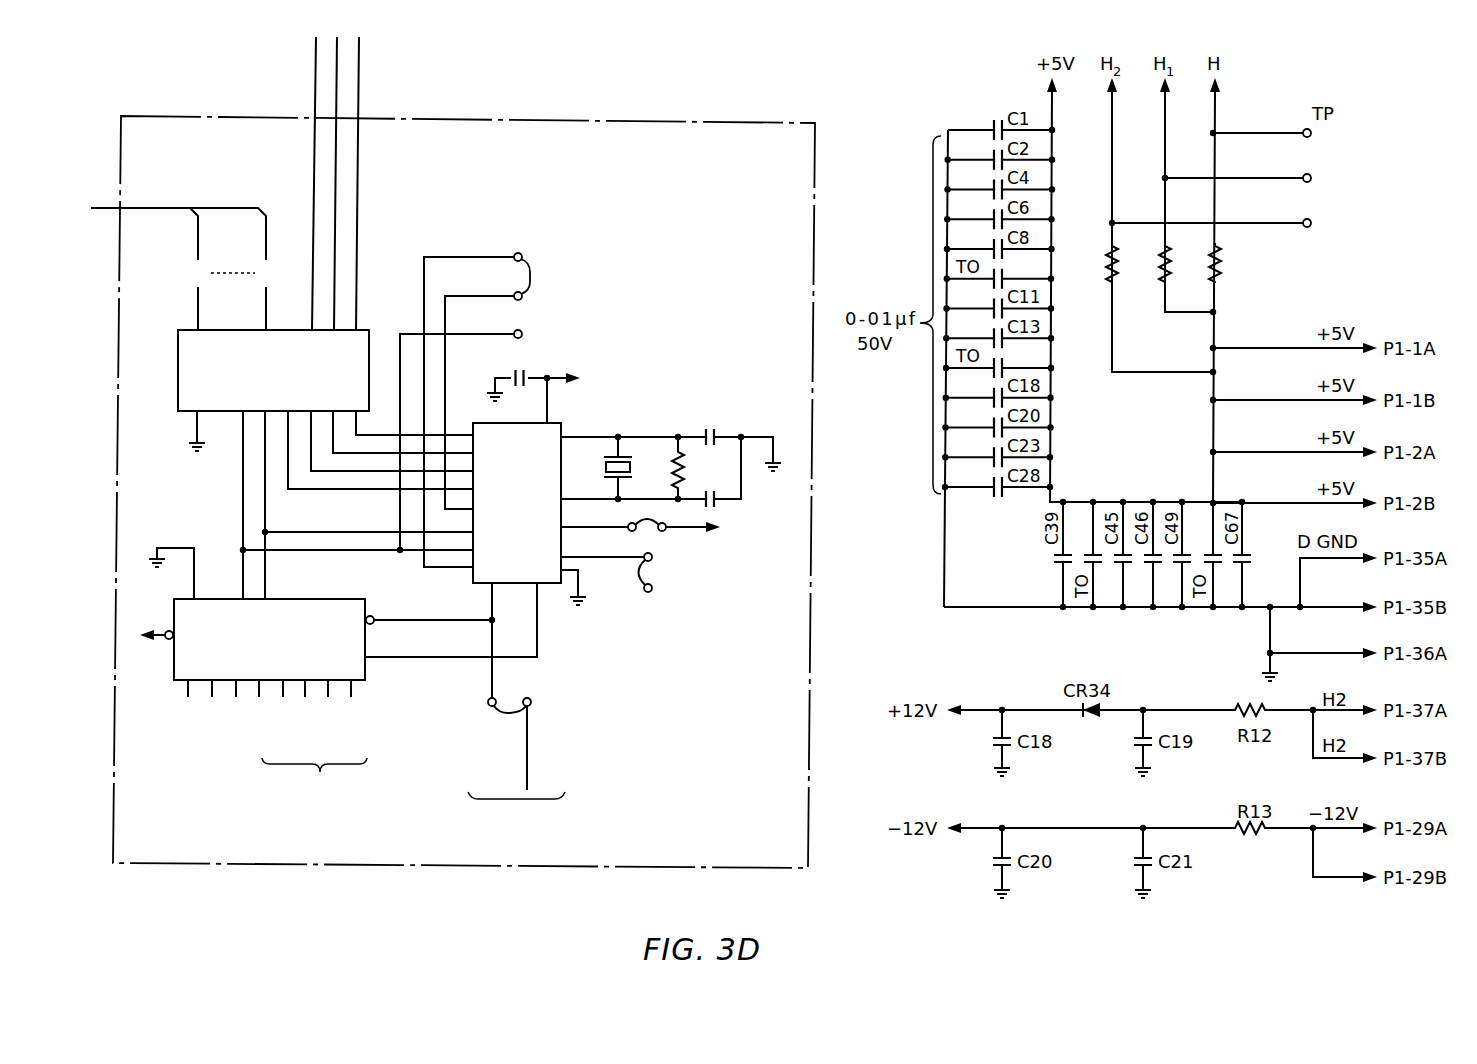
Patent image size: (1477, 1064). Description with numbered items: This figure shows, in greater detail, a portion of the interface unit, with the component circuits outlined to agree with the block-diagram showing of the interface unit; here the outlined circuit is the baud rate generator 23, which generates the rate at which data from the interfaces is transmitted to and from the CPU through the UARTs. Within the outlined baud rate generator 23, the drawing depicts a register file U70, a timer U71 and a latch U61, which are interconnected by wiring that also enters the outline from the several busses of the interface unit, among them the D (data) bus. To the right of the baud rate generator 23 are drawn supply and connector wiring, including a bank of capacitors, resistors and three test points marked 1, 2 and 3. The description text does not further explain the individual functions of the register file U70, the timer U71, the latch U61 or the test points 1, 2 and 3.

The baud rate generator 23 is at (453, 452).
The test point 1 is at (1271, 133).
The test point 2 is at (1247, 178).
The test point 3 is at (1220, 223).
The register file U70 is at (273, 370).
The timer U71 is at (517, 503).
The latch U61 is at (269, 639).